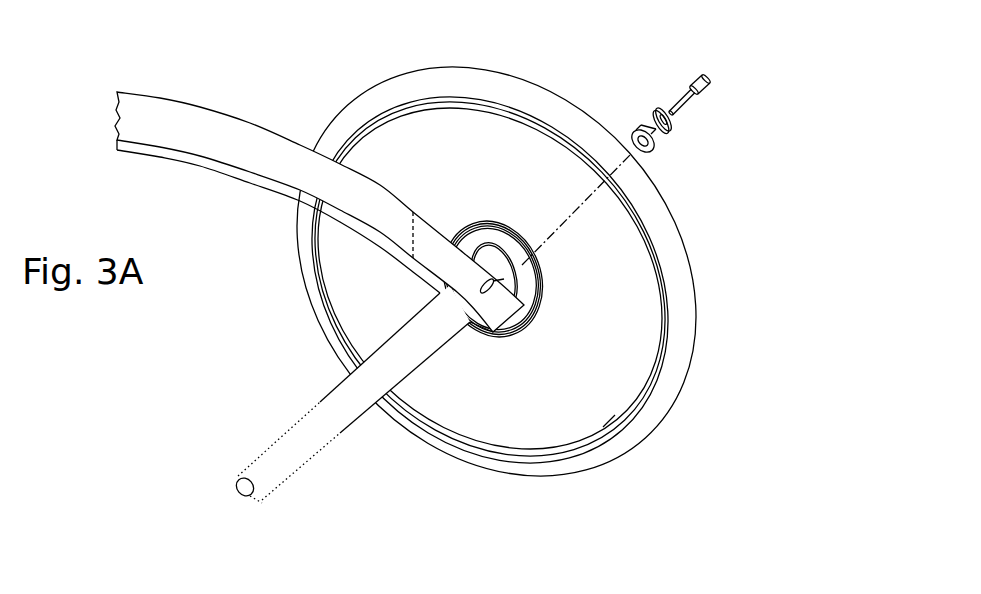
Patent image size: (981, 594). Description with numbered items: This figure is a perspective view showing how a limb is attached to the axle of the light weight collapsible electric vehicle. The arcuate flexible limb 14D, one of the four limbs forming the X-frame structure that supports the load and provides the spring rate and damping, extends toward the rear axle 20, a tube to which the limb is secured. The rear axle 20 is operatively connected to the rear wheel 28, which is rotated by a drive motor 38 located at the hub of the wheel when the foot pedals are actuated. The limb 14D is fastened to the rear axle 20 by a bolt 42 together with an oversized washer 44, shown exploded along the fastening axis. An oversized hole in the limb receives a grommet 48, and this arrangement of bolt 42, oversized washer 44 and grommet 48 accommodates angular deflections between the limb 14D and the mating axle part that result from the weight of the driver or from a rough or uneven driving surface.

The arcuate flexible limb 14D is at (247, 82).
The rear axle 20 is at (296, 420).
The rear wheel 28 is at (658, 430).
The drive motor 38 is at (514, 338).
The bolt 42 is at (732, 108).
The oversized washer 44 is at (632, 93).
The grommet 48 is at (655, 148).